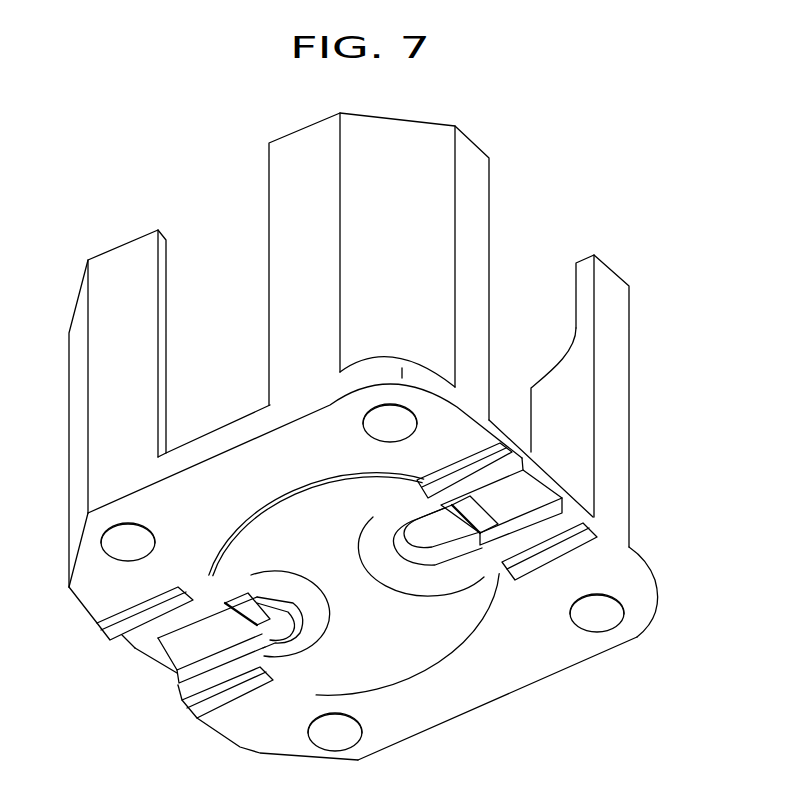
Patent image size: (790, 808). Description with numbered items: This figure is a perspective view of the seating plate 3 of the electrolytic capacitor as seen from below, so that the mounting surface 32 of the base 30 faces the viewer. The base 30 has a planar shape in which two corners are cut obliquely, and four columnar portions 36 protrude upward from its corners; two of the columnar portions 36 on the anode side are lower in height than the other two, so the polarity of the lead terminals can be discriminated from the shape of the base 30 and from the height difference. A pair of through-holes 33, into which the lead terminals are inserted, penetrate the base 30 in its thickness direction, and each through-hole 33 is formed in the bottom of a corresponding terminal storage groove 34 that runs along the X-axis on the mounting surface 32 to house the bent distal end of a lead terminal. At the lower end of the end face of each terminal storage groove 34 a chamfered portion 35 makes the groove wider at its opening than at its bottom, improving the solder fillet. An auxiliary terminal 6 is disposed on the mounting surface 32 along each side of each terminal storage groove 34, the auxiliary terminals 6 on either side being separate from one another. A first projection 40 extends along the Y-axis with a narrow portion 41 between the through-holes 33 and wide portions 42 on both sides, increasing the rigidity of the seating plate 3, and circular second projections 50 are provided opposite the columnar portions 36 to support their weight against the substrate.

The seating plate 3 is at (623, 643).
The base 30 is at (642, 570).
The mounting surface 32 is at (457, 710).
The through-hole 33 is at (270, 608).
The terminal storage groove 34 is at (163, 653).
The chamfered portion 35 is at (480, 552).
The columnar portion 36 is at (123, 257).
The first projection 40 is at (277, 493).
The narrow portion 41 is at (337, 585).
The wide portion 42 is at (243, 507).
The second projection 50 is at (138, 533).
The auxiliary terminal 6 is at (157, 610).